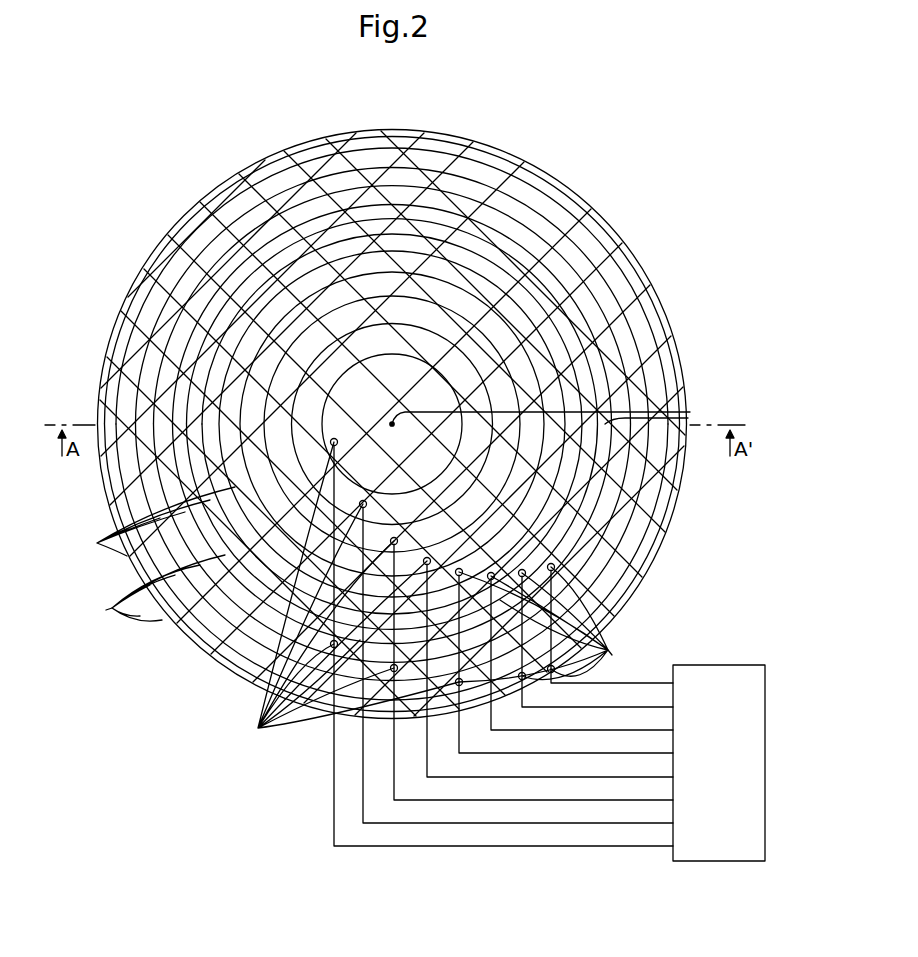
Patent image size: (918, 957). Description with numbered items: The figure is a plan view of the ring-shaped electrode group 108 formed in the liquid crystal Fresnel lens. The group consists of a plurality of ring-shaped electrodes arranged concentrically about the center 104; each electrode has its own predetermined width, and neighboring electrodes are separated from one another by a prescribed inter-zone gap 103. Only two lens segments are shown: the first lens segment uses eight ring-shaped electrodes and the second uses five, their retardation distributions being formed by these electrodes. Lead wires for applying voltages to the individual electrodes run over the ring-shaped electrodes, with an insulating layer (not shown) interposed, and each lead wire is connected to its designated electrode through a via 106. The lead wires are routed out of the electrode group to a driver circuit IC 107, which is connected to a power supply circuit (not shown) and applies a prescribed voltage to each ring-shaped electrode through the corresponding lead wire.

The ring-shaped electrode group 108 is at (476, 117).
The inter-zone gap 103 is at (97, 543).
The center 104 is at (390, 422).
The via 106 is at (258, 728).
The driver circuit IC 107 is at (712, 862).